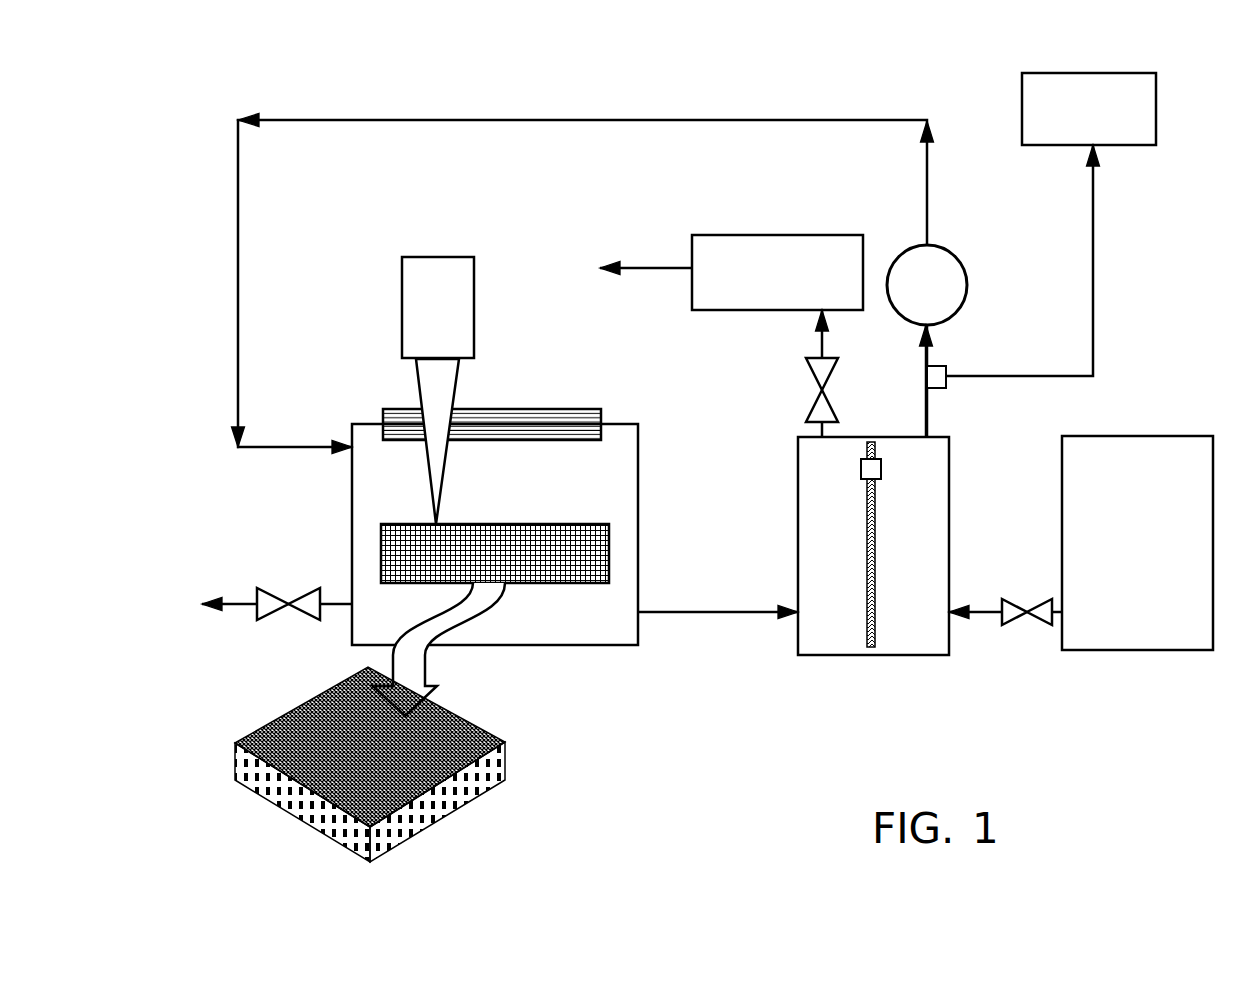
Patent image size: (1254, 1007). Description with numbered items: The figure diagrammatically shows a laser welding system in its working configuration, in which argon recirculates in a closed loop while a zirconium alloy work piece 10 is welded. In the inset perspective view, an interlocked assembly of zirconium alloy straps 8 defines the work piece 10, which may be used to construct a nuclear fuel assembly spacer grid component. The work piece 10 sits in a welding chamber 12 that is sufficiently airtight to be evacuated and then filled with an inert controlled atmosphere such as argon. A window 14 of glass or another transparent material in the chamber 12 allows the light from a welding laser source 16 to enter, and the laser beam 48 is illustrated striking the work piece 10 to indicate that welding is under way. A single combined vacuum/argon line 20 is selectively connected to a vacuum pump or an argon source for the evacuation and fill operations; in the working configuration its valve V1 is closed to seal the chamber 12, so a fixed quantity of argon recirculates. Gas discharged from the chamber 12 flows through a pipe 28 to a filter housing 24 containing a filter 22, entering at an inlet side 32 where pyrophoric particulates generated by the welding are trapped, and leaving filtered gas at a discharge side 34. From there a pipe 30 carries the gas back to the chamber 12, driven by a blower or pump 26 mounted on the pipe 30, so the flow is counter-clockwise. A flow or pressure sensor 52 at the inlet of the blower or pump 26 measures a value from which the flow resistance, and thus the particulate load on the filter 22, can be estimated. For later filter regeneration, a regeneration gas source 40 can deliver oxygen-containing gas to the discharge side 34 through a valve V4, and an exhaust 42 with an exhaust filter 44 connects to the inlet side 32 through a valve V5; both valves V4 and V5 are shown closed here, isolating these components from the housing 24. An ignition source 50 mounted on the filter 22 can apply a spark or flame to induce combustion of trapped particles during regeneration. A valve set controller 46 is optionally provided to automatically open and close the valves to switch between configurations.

The interlocked assembly of zirconium alloy straps 8 is at (277, 713).
The work piece 10 is at (503, 523).
The welding chamber 12 is at (640, 480).
The window 14 is at (532, 408).
The welding laser source 16 is at (474, 297).
The combined vacuum/argon line 20 is at (239, 600).
The filter 22 is at (877, 600).
The filter housing 24 is at (952, 502).
The blower or pump 26 is at (937, 243).
The pipe or tube 28 is at (675, 610).
The pipe or tube 30 is at (630, 118).
The inlet side 32 is at (836, 588).
The discharge side 34 is at (916, 586).
The regeneration gas source 40 is at (1105, 433).
The exhaust 42 is at (651, 263).
The exhaust filter 44 is at (761, 233).
The valve set controller 46 is at (1129, 147).
The laser beam 48 is at (412, 391).
The ignition source 50 is at (860, 467).
The flow or pressure sensor 52 is at (950, 365).
The valve V1 is at (312, 592).
The valve V4 is at (1043, 600).
The valve V5 is at (817, 378).